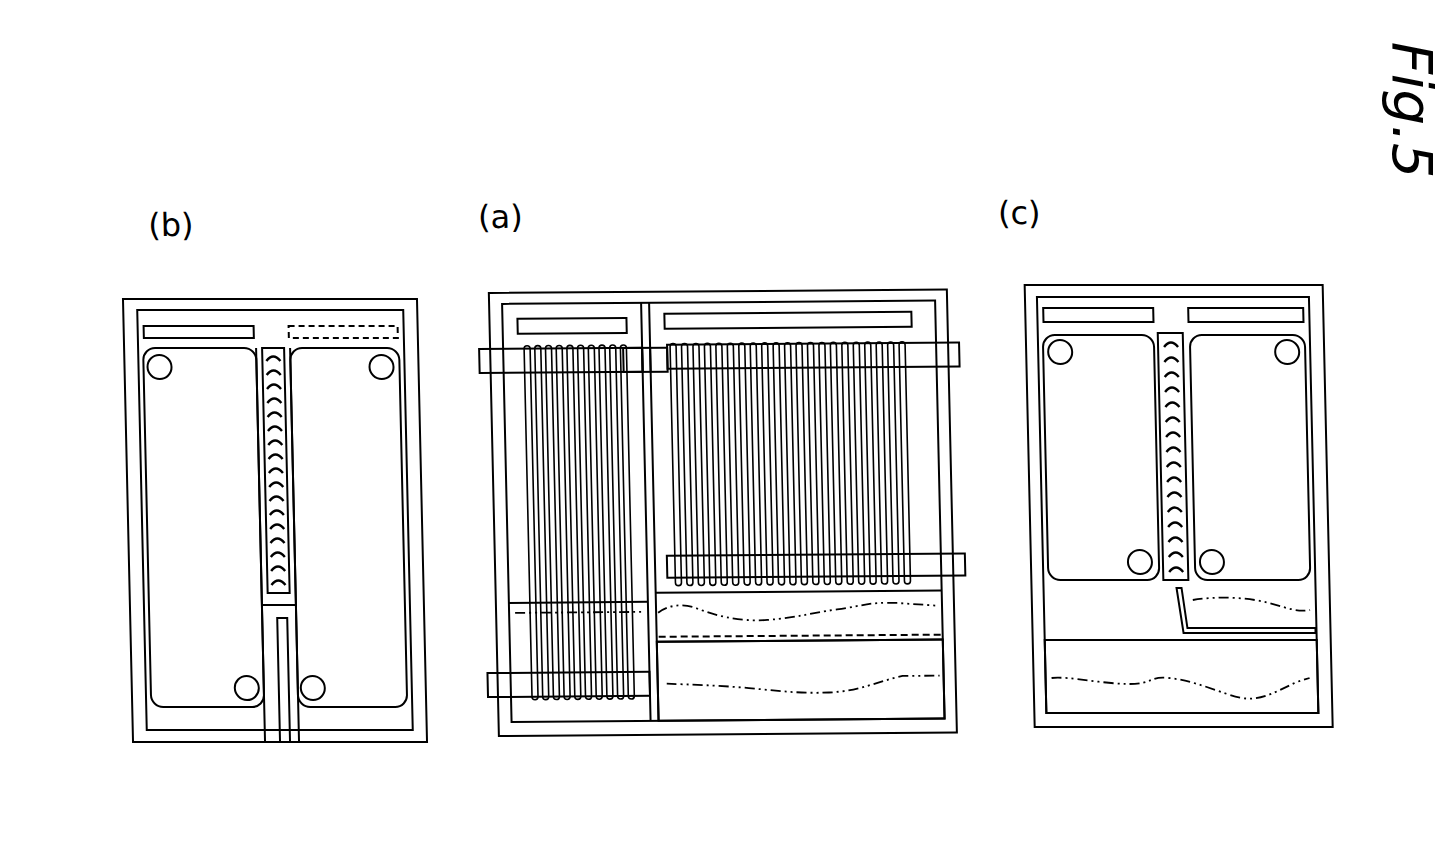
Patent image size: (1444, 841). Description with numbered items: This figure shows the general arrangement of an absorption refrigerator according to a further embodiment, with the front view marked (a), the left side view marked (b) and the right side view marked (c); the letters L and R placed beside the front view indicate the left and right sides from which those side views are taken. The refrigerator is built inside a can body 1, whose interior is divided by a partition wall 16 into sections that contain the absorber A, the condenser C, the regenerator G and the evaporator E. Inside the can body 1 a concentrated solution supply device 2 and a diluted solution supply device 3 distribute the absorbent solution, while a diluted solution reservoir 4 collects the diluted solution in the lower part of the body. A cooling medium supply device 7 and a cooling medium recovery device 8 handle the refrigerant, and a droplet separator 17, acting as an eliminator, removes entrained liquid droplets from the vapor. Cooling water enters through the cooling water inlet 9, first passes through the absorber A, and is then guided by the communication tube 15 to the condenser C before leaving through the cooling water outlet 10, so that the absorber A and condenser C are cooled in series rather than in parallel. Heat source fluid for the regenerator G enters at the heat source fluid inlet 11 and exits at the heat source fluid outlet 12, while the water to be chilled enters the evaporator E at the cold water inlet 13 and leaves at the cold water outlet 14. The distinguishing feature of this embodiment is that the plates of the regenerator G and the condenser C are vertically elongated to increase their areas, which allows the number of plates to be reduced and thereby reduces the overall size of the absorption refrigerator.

The can body 1 is at (731, 294).
The concentrated solution supply device 2 is at (771, 318).
The diluted solution supply device 3 is at (197, 332).
The diluted solution reservoir 4 is at (738, 705).
The cooling medium supply device 7 is at (1238, 318).
The cooling medium recovery device 8 is at (841, 623).
The cooling water inlet 9 is at (304, 692).
The cooling water outlet 10 is at (383, 366).
The heat source fluid inlet 11 is at (238, 692).
The heat source fluid outlet 12 is at (157, 366).
The cold water inlet 13 is at (1181, 600).
The cold water outlet 14 is at (1284, 345).
The communication tube 15 is at (644, 357).
The partition wall 16 is at (651, 353).
The droplet separator 17 is at (269, 357).
The absorber A is at (822, 347).
The condenser C is at (311, 380).
The regenerator G is at (193, 400).
The evaporator E is at (1213, 385).
The left side L is at (467, 323).
The right side R is at (962, 301).